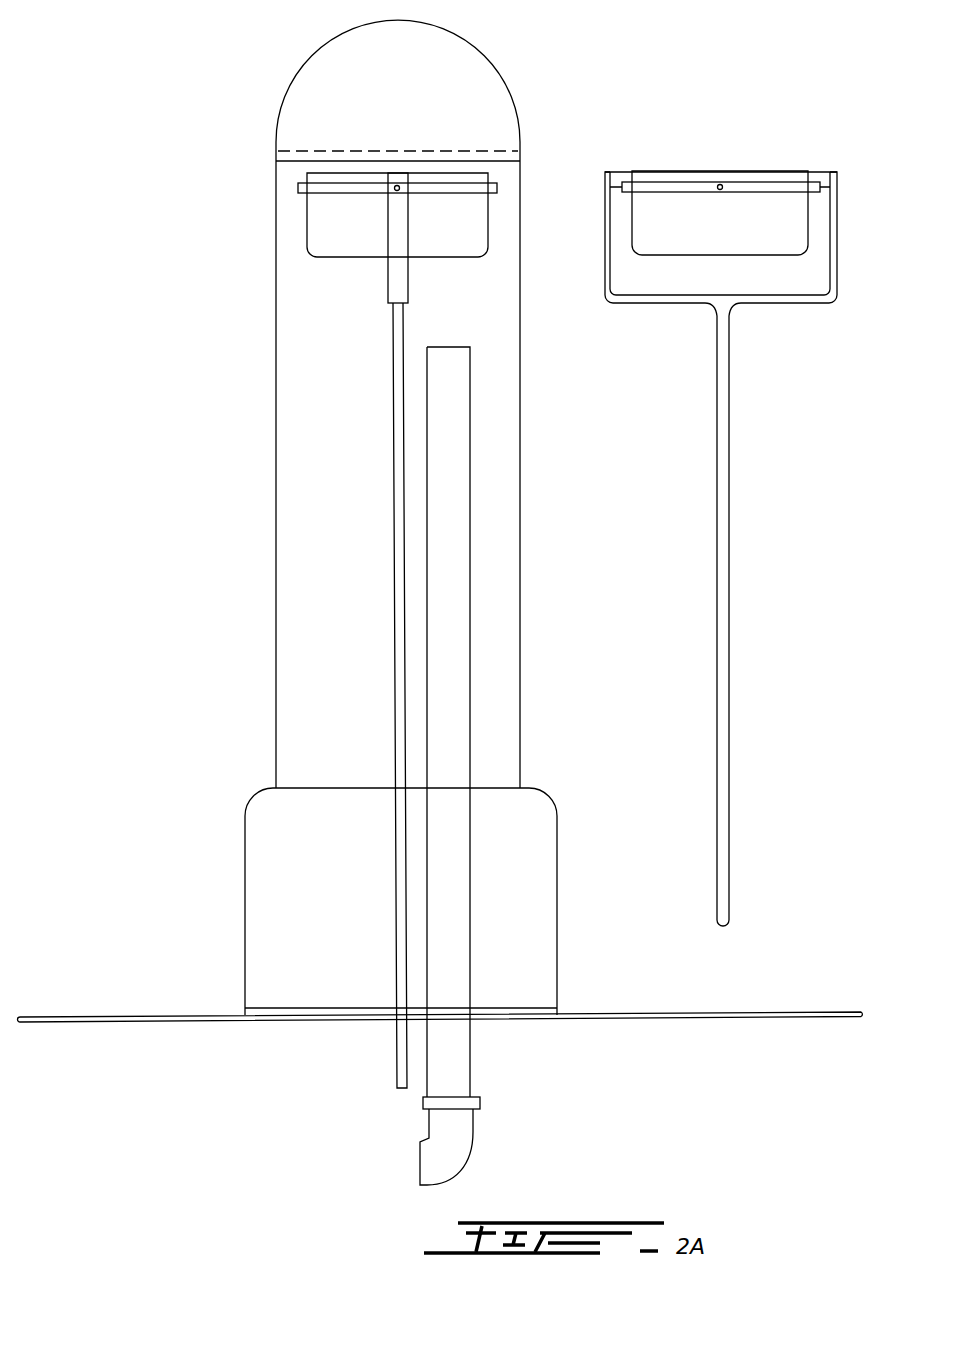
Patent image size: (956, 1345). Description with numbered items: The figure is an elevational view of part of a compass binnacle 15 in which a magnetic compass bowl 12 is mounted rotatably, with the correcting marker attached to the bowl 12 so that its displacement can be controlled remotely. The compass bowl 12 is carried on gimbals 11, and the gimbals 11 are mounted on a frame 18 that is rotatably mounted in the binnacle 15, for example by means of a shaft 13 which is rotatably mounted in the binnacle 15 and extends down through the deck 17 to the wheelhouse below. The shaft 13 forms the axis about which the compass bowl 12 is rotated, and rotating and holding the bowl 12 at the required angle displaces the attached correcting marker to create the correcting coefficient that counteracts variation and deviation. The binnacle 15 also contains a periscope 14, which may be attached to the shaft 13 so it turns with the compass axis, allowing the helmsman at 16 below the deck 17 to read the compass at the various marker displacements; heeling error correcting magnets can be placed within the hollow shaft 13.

The gimbals 11 is at (500, 186).
The compass bowl 12 is at (669, 259).
The shaft 13 is at (406, 613).
The periscope 14 is at (477, 1137).
The binnacle 15 is at (274, 503).
The helmsman 16 is at (180, 1167).
The deck 17 is at (717, 1010).
The frame 18 is at (602, 250).